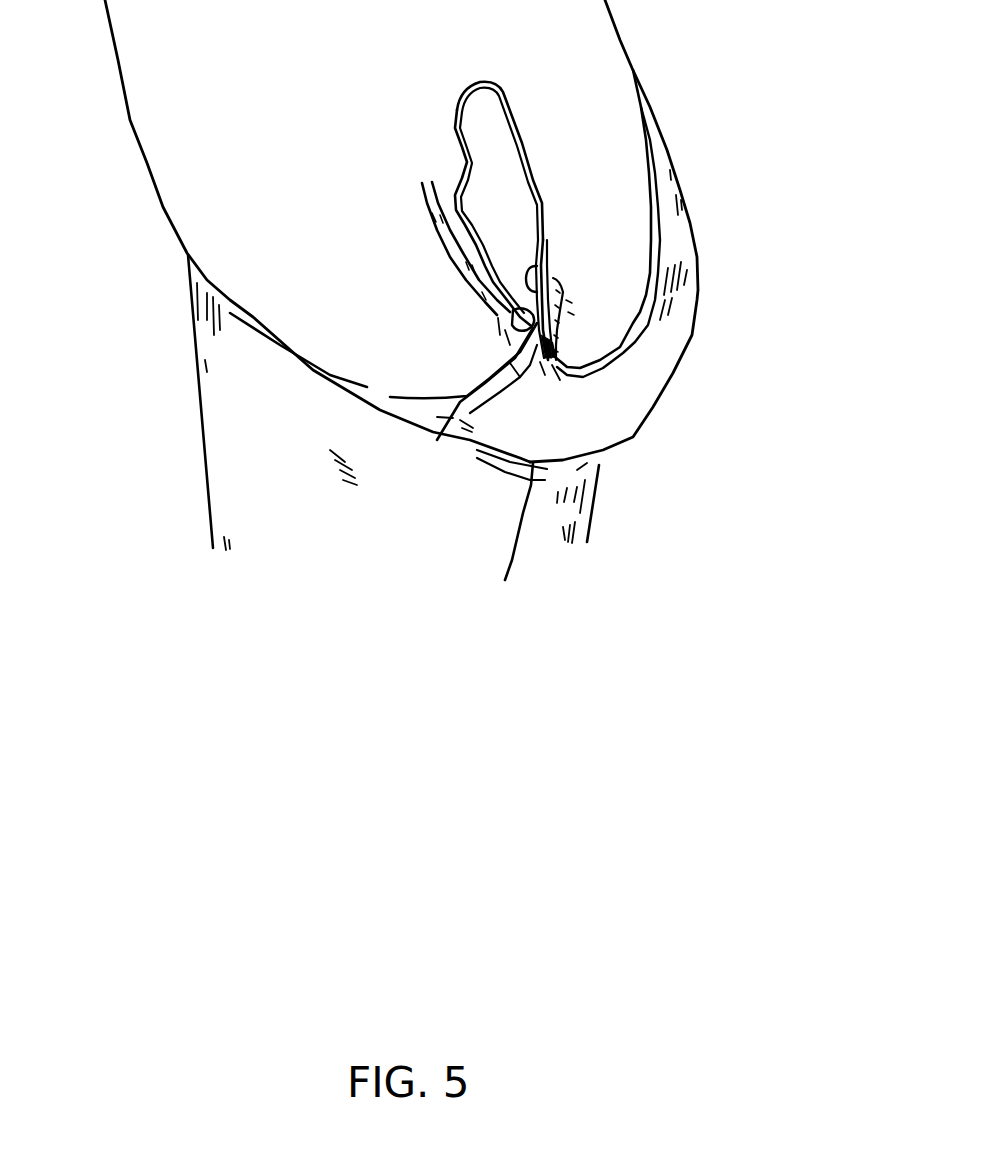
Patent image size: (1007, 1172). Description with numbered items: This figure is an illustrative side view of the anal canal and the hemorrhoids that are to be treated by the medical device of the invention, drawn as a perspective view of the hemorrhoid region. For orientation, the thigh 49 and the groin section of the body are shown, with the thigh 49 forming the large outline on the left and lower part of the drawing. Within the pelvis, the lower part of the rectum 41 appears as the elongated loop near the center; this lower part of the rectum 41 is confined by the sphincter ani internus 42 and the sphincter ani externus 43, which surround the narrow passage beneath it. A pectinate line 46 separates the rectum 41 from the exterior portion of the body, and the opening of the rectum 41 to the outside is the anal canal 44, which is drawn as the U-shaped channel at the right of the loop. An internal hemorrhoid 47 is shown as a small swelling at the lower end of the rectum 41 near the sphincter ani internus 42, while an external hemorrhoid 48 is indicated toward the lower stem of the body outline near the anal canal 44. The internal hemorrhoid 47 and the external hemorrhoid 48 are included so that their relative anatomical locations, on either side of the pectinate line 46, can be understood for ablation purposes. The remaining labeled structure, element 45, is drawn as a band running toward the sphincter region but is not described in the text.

The rectum 41 is at (507, 163).
The sphincter ani internus 42 is at (543, 285).
The sphincter ani externus 43 is at (563, 320).
The anal canal 44 is at (550, 358).
The pubic bone 45 is at (442, 250).
The pectinate line 46 is at (437, 440).
The internal hemorrhoid 47 is at (536, 268).
The external hemorrhoid 48 is at (505, 580).
The thigh 49 is at (243, 373).